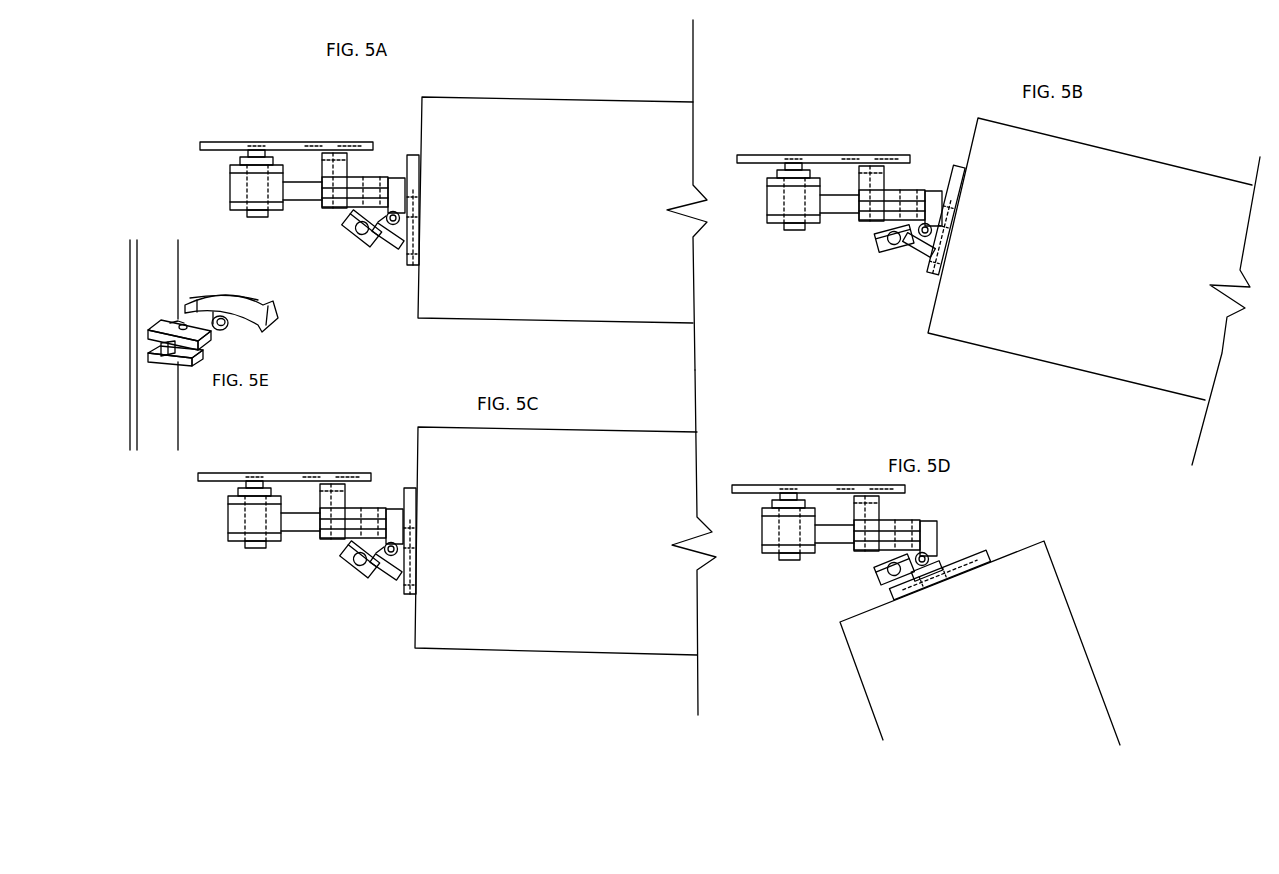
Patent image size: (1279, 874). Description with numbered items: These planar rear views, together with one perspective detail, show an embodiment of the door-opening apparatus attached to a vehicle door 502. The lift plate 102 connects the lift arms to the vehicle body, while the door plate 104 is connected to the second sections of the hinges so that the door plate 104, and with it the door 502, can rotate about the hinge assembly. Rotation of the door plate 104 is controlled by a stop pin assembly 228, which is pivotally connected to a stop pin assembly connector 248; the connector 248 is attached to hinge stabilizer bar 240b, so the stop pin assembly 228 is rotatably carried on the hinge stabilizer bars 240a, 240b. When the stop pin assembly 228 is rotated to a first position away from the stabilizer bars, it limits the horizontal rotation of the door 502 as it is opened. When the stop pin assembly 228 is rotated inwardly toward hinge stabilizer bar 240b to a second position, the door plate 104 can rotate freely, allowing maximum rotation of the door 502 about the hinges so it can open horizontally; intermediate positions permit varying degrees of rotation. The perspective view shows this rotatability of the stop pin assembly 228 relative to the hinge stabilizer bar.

In FIG. 5A, the lift plate 102 is at (280, 143).
In FIG. 5B, the lift plate 102 is at (823, 170).
In FIG. 5C, the lift plate 102 is at (284, 491).
In FIG. 5D, the lift plate 102 is at (818, 505).
In FIG. 5A, the door plate 104 is at (413, 163).
In FIG. 5B, the door plate 104 is at (957, 170).
In FIG. 5C, the door plate 104 is at (408, 490).
In FIG. 5D, the door plate 104 is at (973, 560).
In FIG. 5A, the stop pin assembly 228 is at (385, 241).
In FIG. 5E, the stop pin assembly 228 is at (220, 320).
In FIG. 5B, the stop pin assembly 228 is at (911, 263).
In FIG. 5C, the stop pin assembly 228 is at (373, 592).
In FIG. 5D, the stop pin assembly 228 is at (941, 547).
In FIG. 5A, the hinge stabilizer bar 240a is at (362, 177).
In FIG. 5B, the hinge stabilizer bar 240a is at (905, 178).
In FIG. 5C, the hinge stabilizer bar 240a is at (355, 483).
In FIG. 5D, the hinge stabilizer bar 240a is at (897, 520).
In FIG. 5A, the hinge stabilizer bar 240b is at (378, 206).
In FIG. 5E, the hinge stabilizer bar 240b is at (152, 260).
In FIG. 5B, the hinge stabilizer bar 240b is at (872, 222).
In FIG. 5C, the hinge stabilizer bar 240b is at (305, 566).
In FIG. 5D, the hinge stabilizer bar 240b is at (840, 556).
In FIG. 5A, the stop pin assembly connector 248 is at (355, 226).
In FIG. 5E, the stop pin assembly connector 248 is at (190, 326).
In FIG. 5B, the stop pin assembly connector 248 is at (877, 269).
In FIG. 5C, the stop pin assembly connector 248 is at (338, 581).
In FIG. 5D, the stop pin assembly connector 248 is at (855, 591).
In FIG. 5A, the vehicle door 502 is at (493, 133).
In FIG. 5B, the vehicle door 502 is at (1110, 177).
In FIG. 5C, the vehicle door 502 is at (548, 448).
In FIG. 5D, the vehicle door 502 is at (1048, 627).